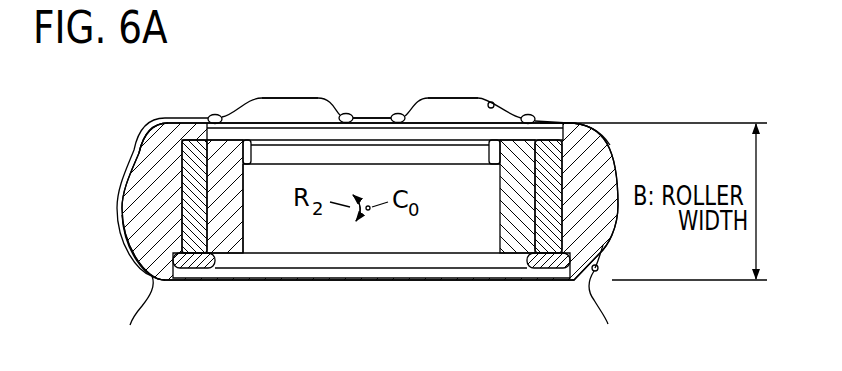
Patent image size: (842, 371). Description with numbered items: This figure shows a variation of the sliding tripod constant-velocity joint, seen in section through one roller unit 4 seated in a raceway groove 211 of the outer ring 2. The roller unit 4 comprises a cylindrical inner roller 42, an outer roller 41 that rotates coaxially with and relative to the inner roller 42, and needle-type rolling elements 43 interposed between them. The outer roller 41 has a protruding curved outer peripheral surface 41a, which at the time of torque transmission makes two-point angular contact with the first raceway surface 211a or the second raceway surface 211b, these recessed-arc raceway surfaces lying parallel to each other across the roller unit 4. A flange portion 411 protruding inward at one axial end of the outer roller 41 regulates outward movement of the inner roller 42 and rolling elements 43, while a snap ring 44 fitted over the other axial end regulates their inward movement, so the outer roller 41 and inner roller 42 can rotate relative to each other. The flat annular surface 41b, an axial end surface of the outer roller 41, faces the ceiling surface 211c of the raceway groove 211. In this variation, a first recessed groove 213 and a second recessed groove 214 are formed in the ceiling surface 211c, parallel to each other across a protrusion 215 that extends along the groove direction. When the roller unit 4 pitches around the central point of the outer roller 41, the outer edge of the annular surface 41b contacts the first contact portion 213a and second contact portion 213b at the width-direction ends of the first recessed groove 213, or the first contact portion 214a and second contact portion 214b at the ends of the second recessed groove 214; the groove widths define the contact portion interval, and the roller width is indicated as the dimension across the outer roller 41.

The outer ring 2 is at (593, 305).
The roller unit 4 is at (210, 302).
The outer roller 41 is at (605, 185).
The outer peripheral surface 41a is at (140, 258).
The annular surface 41b is at (563, 122).
The inner roller 42 is at (518, 242).
The rolling elements 43 is at (553, 177).
The snap ring 44 is at (550, 262).
The raceway groove 211 is at (152, 276).
The first raceway surface 211a is at (598, 267).
The second raceway surface 211b is at (143, 138).
The ceiling surface 211c is at (492, 102).
The first recessed groove 213 is at (286, 108).
The first contact portion 213a is at (344, 113).
The second contact portion 213b is at (214, 114).
The second recessed groove 214 is at (451, 108).
The first contact portion 214a is at (530, 114).
The second contact portion 214b is at (400, 113).
The protrusion 215 is at (372, 113).
The flange portion 411 is at (205, 133).